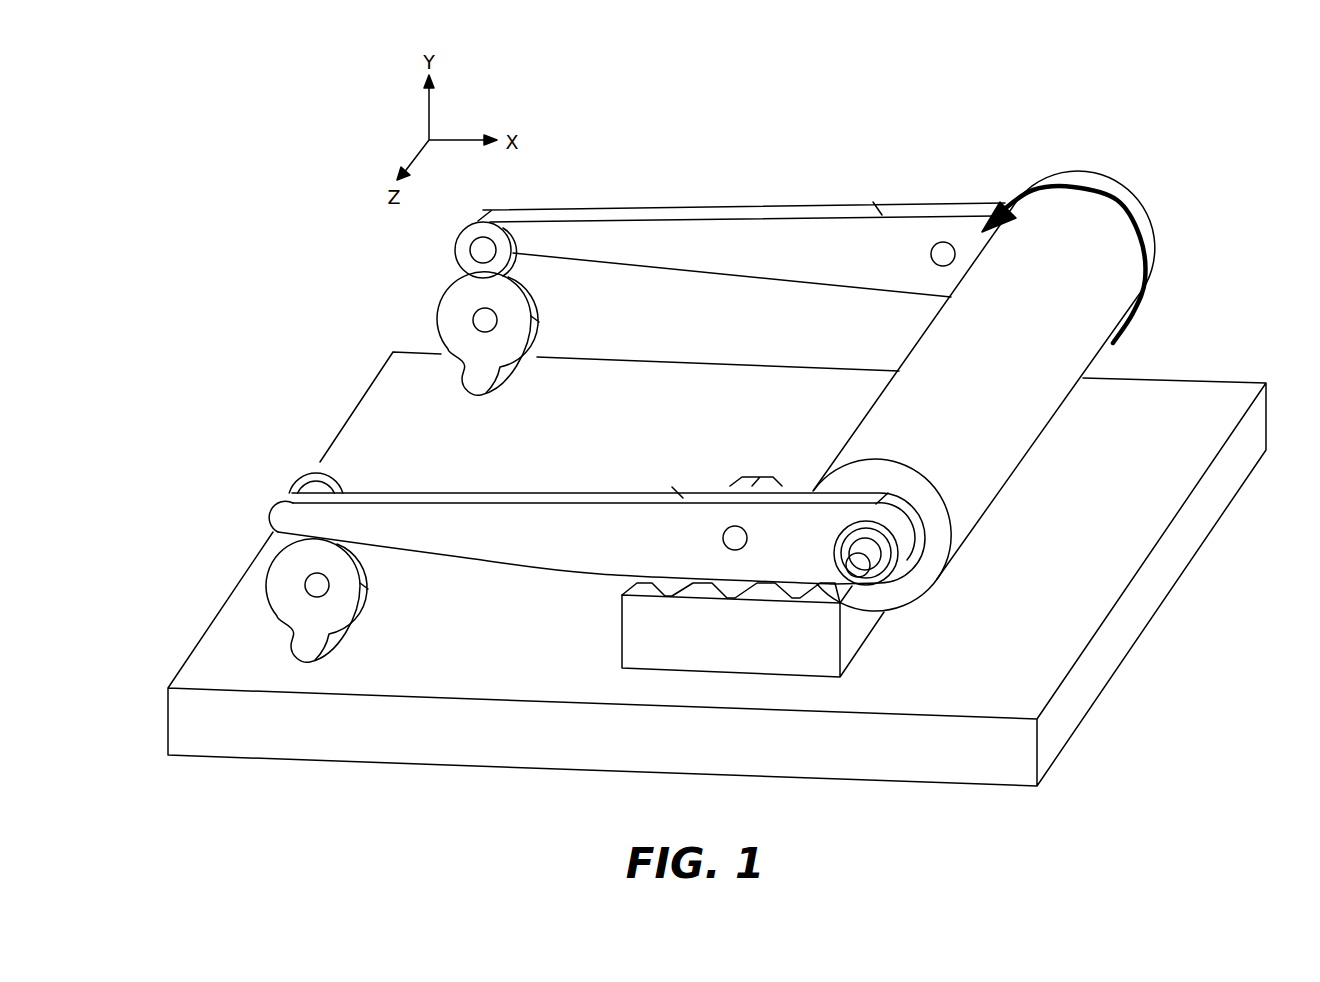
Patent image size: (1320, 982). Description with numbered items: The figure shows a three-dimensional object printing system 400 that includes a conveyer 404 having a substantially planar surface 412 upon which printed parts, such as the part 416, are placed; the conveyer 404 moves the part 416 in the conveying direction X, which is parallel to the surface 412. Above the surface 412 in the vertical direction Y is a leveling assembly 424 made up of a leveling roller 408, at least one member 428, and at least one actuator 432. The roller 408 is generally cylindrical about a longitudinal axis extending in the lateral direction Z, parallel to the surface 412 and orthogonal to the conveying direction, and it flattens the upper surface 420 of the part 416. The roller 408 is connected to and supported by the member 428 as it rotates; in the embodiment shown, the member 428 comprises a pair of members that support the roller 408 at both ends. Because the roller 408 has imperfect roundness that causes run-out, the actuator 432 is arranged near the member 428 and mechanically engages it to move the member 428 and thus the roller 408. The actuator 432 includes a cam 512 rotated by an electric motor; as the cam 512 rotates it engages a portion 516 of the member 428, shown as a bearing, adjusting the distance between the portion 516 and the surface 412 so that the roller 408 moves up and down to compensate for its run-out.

The three-dimensional object printing system 400 is at (673, 183).
The conveyer 404 is at (440, 748).
The leveling roller 408 is at (1103, 182).
The surface 412 is at (698, 380).
The part 416 is at (632, 632).
The upper surface 420 is at (760, 476).
The leveling assembly 424 is at (852, 170).
The member 428 is at (765, 203).
The actuator 432 is at (430, 322).
The cam 512 is at (402, 467).
The portion 516 is at (455, 246).